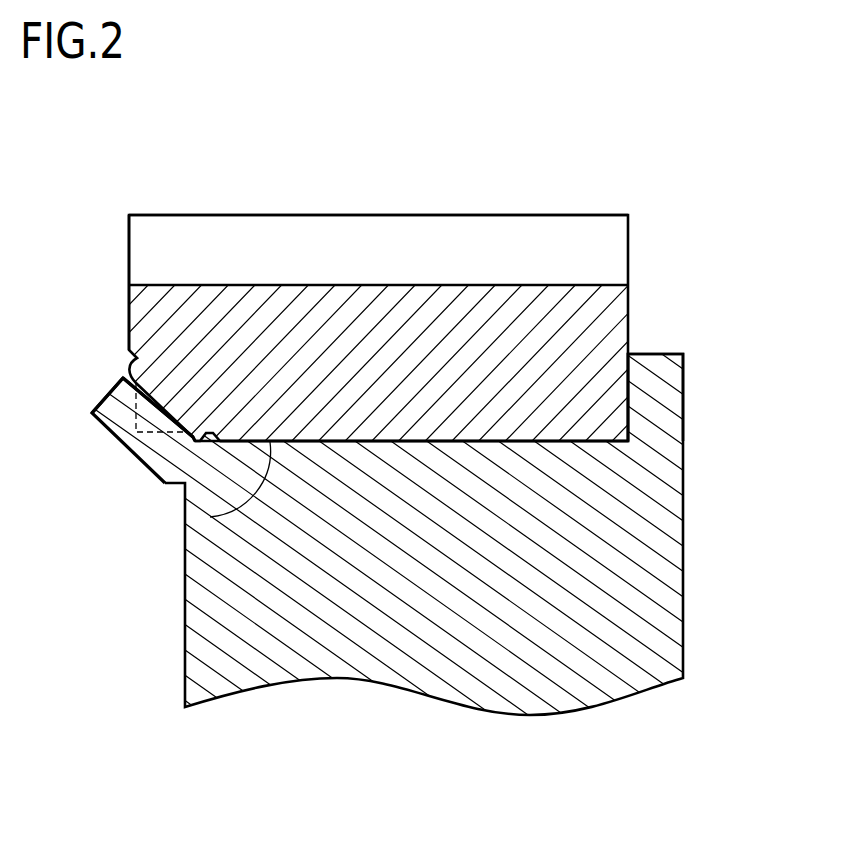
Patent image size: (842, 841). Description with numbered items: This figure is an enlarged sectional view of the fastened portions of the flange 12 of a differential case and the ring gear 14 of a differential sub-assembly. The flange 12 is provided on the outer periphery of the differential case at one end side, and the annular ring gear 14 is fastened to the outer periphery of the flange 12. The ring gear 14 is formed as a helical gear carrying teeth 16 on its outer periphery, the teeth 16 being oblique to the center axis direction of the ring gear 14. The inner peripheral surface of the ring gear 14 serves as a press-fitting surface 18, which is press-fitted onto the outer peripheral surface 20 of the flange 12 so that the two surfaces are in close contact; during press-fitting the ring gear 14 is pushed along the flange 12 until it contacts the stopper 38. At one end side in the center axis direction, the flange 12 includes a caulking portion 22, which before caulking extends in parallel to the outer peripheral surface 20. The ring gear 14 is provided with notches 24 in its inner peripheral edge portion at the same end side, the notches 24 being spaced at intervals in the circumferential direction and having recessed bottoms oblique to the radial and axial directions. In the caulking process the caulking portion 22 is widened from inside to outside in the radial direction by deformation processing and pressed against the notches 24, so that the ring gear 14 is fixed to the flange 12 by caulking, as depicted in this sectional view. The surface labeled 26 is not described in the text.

The flange 12 is at (683, 510).
The ring gear 14 is at (629, 248).
The teeth 16 is at (507, 215).
The press-fitting surface 18 is at (210, 517).
The outer peripheral surface 20 is at (537, 441).
The caulking portion 22 is at (112, 410).
The notches 24 is at (155, 402).
The side surface 26 is at (129, 322).
The stopper 38 is at (657, 372).